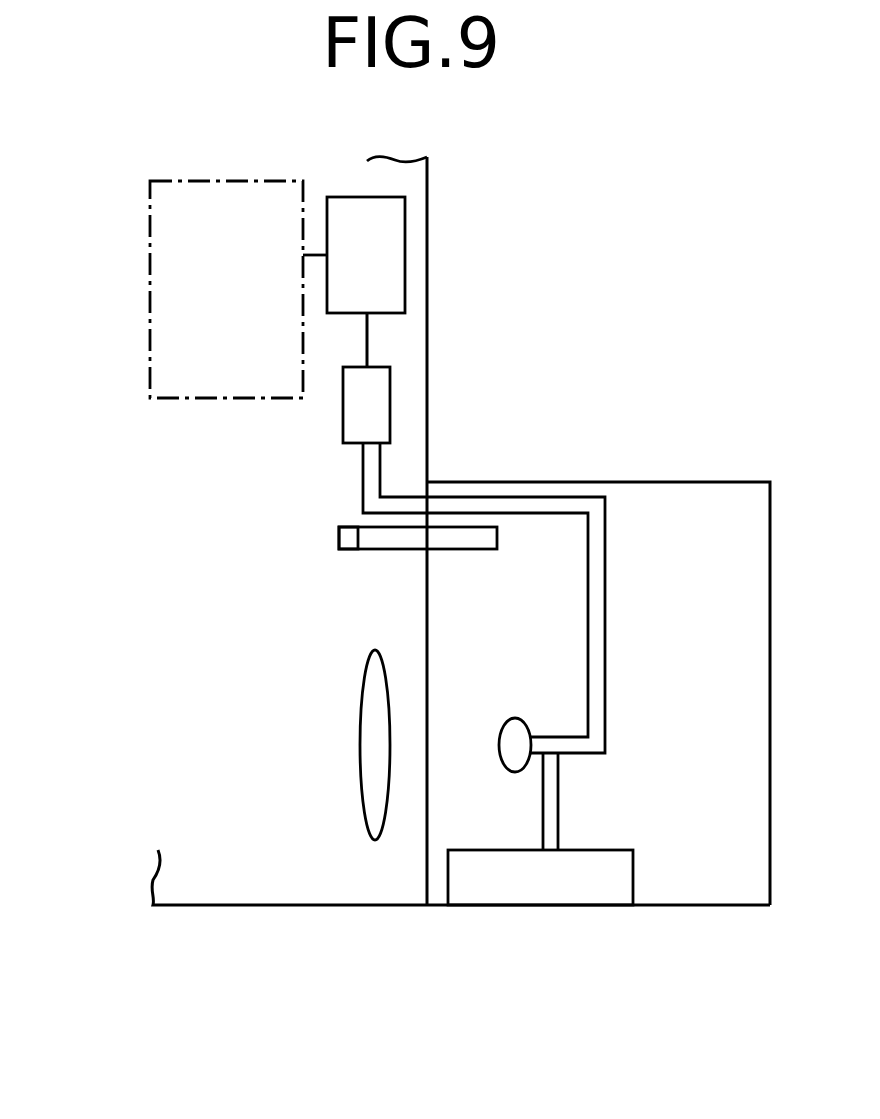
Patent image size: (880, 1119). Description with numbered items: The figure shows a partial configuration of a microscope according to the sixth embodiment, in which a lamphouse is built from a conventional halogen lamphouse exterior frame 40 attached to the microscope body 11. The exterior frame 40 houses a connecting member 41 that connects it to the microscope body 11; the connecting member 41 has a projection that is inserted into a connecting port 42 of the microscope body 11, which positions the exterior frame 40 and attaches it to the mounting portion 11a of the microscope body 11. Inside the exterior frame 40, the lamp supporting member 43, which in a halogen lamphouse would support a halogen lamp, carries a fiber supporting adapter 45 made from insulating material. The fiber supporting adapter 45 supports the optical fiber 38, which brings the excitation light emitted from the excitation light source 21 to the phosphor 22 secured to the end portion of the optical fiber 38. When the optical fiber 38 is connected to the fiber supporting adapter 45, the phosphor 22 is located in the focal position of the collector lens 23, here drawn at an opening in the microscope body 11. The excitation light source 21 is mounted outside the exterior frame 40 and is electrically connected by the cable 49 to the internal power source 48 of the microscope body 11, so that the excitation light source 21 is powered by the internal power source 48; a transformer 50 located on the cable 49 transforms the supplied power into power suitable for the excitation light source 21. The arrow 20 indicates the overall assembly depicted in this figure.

The microscope body 11 is at (303, 905).
The mounting portion 11a is at (425, 880).
The test apparatus 20 is at (748, 425).
The excitation light source 21 is at (390, 418).
The phosphor 22 is at (513, 718).
The collector lens 23 is at (360, 745).
The optical fiber 38 is at (605, 632).
The exterior frame 40 is at (613, 482).
The connecting member 41 is at (463, 549).
The connecting port 42 is at (339, 536).
The lamp supporting member 43 is at (633, 873).
The fiber supporting adapter 45 is at (558, 802).
The internal power source 48 is at (150, 302).
The cable 49 is at (367, 340).
The transformer 50 is at (405, 252).